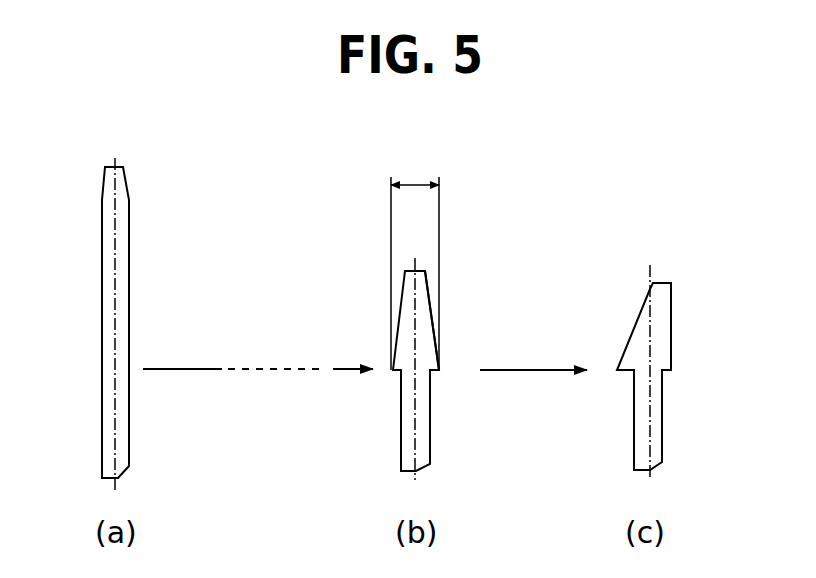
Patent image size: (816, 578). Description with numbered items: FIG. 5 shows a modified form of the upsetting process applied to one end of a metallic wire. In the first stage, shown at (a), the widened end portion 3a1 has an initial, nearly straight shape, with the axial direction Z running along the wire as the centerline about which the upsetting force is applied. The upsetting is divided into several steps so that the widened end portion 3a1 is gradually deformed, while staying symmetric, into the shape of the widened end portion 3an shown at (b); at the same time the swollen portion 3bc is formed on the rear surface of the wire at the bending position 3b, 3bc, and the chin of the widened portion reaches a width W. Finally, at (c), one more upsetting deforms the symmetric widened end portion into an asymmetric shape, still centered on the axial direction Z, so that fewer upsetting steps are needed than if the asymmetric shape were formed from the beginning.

The widened end portion (first-step shape) 3a1 is at (120, 192).
The widened end portion (n-th step shape) 3an is at (424, 296).
The bending position 3b is at (488, 320).
The swollen portion 3bc is at (419, 369).
The width of the chin W is at (415, 261).
The axial direction Z is at (117, 427).